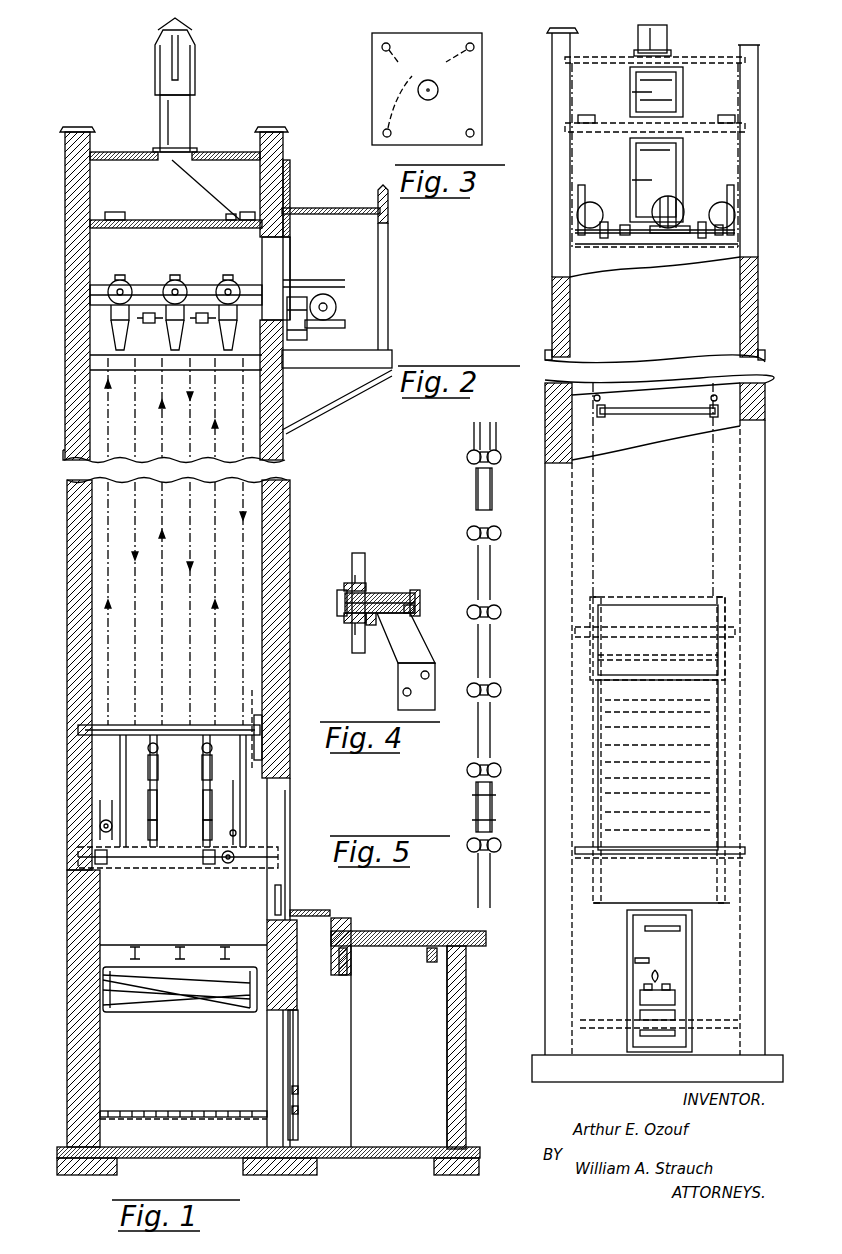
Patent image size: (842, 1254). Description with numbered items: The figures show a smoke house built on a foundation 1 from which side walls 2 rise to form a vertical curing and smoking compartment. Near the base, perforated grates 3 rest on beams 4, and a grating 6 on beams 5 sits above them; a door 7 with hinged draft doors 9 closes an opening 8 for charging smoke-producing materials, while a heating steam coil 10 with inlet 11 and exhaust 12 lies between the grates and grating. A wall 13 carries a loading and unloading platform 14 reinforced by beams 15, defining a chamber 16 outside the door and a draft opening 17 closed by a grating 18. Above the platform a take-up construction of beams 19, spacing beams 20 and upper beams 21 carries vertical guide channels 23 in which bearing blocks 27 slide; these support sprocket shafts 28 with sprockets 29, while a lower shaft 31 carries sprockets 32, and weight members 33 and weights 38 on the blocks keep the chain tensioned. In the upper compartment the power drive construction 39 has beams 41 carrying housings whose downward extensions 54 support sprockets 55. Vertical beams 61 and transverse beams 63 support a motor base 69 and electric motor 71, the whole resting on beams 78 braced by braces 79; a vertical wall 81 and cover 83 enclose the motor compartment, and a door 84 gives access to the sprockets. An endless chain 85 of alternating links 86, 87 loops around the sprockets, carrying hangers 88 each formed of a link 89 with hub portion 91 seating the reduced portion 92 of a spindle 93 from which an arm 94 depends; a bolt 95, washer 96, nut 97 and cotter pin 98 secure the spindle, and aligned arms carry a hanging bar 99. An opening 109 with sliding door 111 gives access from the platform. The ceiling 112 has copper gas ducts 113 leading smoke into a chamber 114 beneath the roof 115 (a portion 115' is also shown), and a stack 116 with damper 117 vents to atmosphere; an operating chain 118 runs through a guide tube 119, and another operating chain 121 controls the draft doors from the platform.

In FIG. 1, the foundation 1 is at (336, 1147).
In FIG. 2, the foundation 1 is at (576, 1062).
In FIG. 1, the side walls 2 is at (276, 628).
In FIG. 2, the side walls 2 is at (752, 608).
In FIG. 1, the perforated plates or grates 3 is at (201, 1111).
In FIG. 2, the perforated plates or grates 3 is at (598, 1018).
In FIG. 1, the beams 4 is at (166, 1117).
In FIG. 2, the beams 4 is at (620, 1029).
In FIG. 1, the beams 5 is at (216, 958).
In FIG. 2, the beams 5 is at (660, 860).
In FIG. 1, the grating 6 is at (166, 945).
In FIG. 2, the grating 6 is at (576, 854).
In FIG. 1, the door 7 is at (298, 1062).
In FIG. 2, the door 7 is at (672, 976).
In FIG. 1, the opening 8 is at (276, 1050).
In FIG. 1, the hinged draft doors 9 is at (300, 1112).
In FIG. 2, the hinged draft doors 9 is at (676, 1004).
In FIG. 1, the heating steam coil 10 is at (216, 995).
In FIG. 1, the inlet 11 is at (312, 976).
In FIG. 2, the inlet 11 is at (590, 642).
In FIG. 1, the exhaust 12 is at (300, 1004).
In FIG. 1, the wall 13 is at (468, 1056).
In FIG. 1, the loading and unloading platform 14 is at (426, 931).
In FIG. 1, the beams 15 is at (430, 962).
In FIG. 1, the chamber 16 is at (400, 1036).
In FIG. 1, the draft opening 17 is at (350, 931).
In FIG. 1, the grating 18 is at (318, 912).
In FIG. 1, the beams 19 is at (152, 857).
In FIG. 1, the spacing and supporting beams 20 is at (102, 866).
In FIG. 1, the beams 21 is at (233, 725).
In FIG. 1, the guide channels 23 is at (120, 790).
In FIG. 1, the bearing block 27 is at (160, 750).
In FIG. 1, the sprocket shafts 28 is at (212, 748).
In FIG. 1, the sprocket 29 is at (212, 762).
In FIG. 1, the sprocket shaft 31 is at (232, 864).
In FIG. 1, the sprocket 32 is at (238, 836).
In FIG. 1, the weight member 33 is at (203, 832).
In FIG. 1, the weight 38 is at (100, 827).
In FIG. 1, the power drive construction 39 is at (206, 290).
In FIG. 2, the power drive construction 39 is at (610, 240).
In FIG. 1, the beams 41 is at (168, 290).
In FIG. 1, the downward extension 54 is at (168, 335).
In FIG. 1, the sprocket 55 is at (120, 280).
In FIG. 2, the beams 61 is at (590, 203).
In FIG. 2, the beams 63 is at (638, 245).
In FIG. 1, the motor base 69 is at (322, 337).
In FIG. 1, the electric motor 71 is at (328, 300).
In FIG. 2, the electric motor 71 is at (677, 208).
In FIG. 1, the beams 78 is at (95, 372).
In FIG. 1, the braces 79 is at (356, 388).
In FIG. 1, the vertical wall 81 is at (390, 198).
In FIG. 1, the cover 83 is at (338, 208).
In FIG. 1, the door 84 is at (292, 262).
In FIG. 2, the door 84 is at (666, 184).
In FIG. 1, the endless chain 85 is at (130, 531).
In FIG. 5, the links 86 is at (497, 579).
In FIG. 5, the links 87 is at (498, 625).
In FIG. 4, the hangers 88 is at (380, 595).
In FIG. 4, the link 89 is at (358, 553).
In FIG. 5, the link 89 is at (498, 462).
In FIG. 4, the hub portion 91 is at (348, 588).
In FIG. 4, the reduced portion 92 is at (371, 626).
In FIG. 4, the spindle 93 is at (400, 597).
In FIG. 4, the arm 94 is at (414, 660).
In FIG. 4, the bolt 95 is at (348, 626).
In FIG. 4, the washer 96 is at (344, 618).
In FIG. 4, the nut 97 is at (418, 611).
In FIG. 4, the cotter pin 98 is at (420, 600).
In FIG. 2, the hanging bar 99 is at (628, 414).
In FIG. 1, the opening 109 is at (290, 832).
In FIG. 1, the sliding door 111 is at (292, 779).
In FIG. 1, the ceiling or top 112 is at (150, 214).
In FIG. 2, the ceiling or top 112 is at (612, 130).
In FIG. 1, the copper gas ducts 113 is at (112, 212).
In FIG. 3, the copper gas ducts 113 is at (428, 90).
In FIG. 1, the chamber 114 is at (118, 168).
In FIG. 2, the chamber 114 is at (726, 112).
In FIG. 1, the roof 115 is at (226, 139).
In FIG. 2, the roof 115 is at (679, 91).
In FIG. 3, the roof 115 is at (456, 89).
In FIG. 1, the cover strip 115' is at (307, 195).
In FIG. 1, the ventilator or stack 116 is at (185, 112).
In FIG. 2, the ventilator or stack 116 is at (672, 42).
In FIG. 1, the damper 117 is at (206, 190).
In FIG. 1, the operating chain 118 is at (228, 214).
In FIG. 1, the guide tube 119 is at (265, 706).
In FIG. 1, the operating chain 121 is at (295, 894).